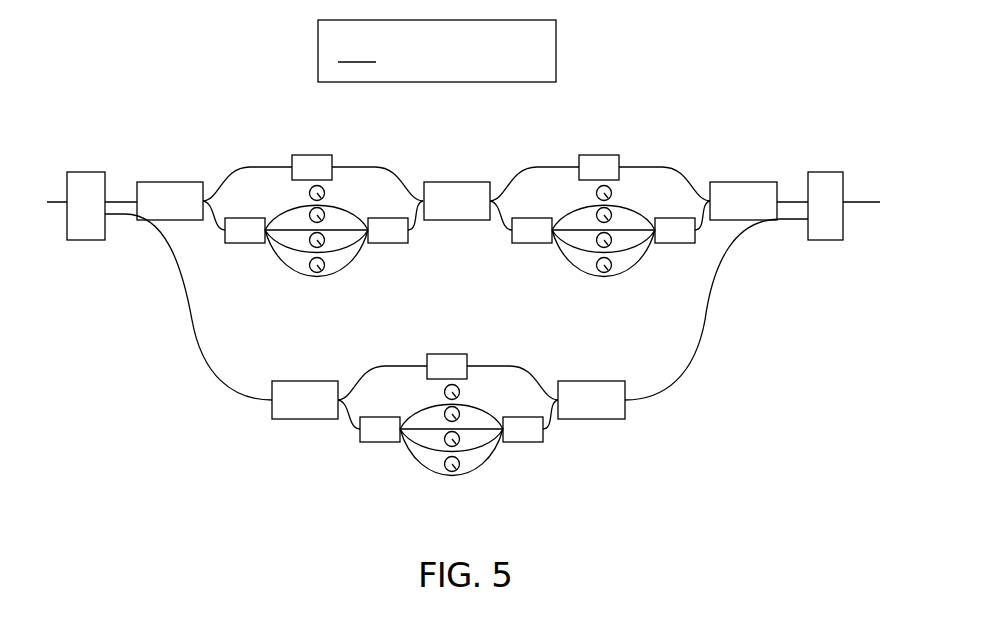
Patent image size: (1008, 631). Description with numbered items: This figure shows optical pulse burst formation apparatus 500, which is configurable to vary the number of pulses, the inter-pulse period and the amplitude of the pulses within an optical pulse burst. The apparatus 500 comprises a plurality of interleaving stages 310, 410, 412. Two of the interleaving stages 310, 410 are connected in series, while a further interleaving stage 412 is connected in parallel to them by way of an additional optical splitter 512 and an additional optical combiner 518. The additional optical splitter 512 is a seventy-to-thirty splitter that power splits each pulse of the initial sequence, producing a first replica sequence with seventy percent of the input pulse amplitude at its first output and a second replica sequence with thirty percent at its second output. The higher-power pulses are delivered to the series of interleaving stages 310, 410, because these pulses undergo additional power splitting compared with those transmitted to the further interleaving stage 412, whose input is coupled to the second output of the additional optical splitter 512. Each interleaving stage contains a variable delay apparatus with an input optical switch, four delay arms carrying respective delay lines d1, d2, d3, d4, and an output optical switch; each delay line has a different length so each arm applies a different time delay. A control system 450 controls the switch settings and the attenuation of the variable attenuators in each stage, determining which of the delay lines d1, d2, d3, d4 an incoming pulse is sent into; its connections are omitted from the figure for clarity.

The optical pulse burst formation apparatus 500 is at (688, 84).
The interleaving stage 310 is at (258, 128).
The interleaving stage 410 is at (492, 146).
The further interleaving stage 412 is at (365, 461).
The control system 450 is at (437, 51).
The additional optical splitter 512 is at (87, 240).
The additional optical combiner 518 is at (832, 240).
The delay line d1 is at (309, 192).
The delay line d2 is at (322, 205).
The delay line d3 is at (322, 247).
The delay line d4 is at (306, 275).